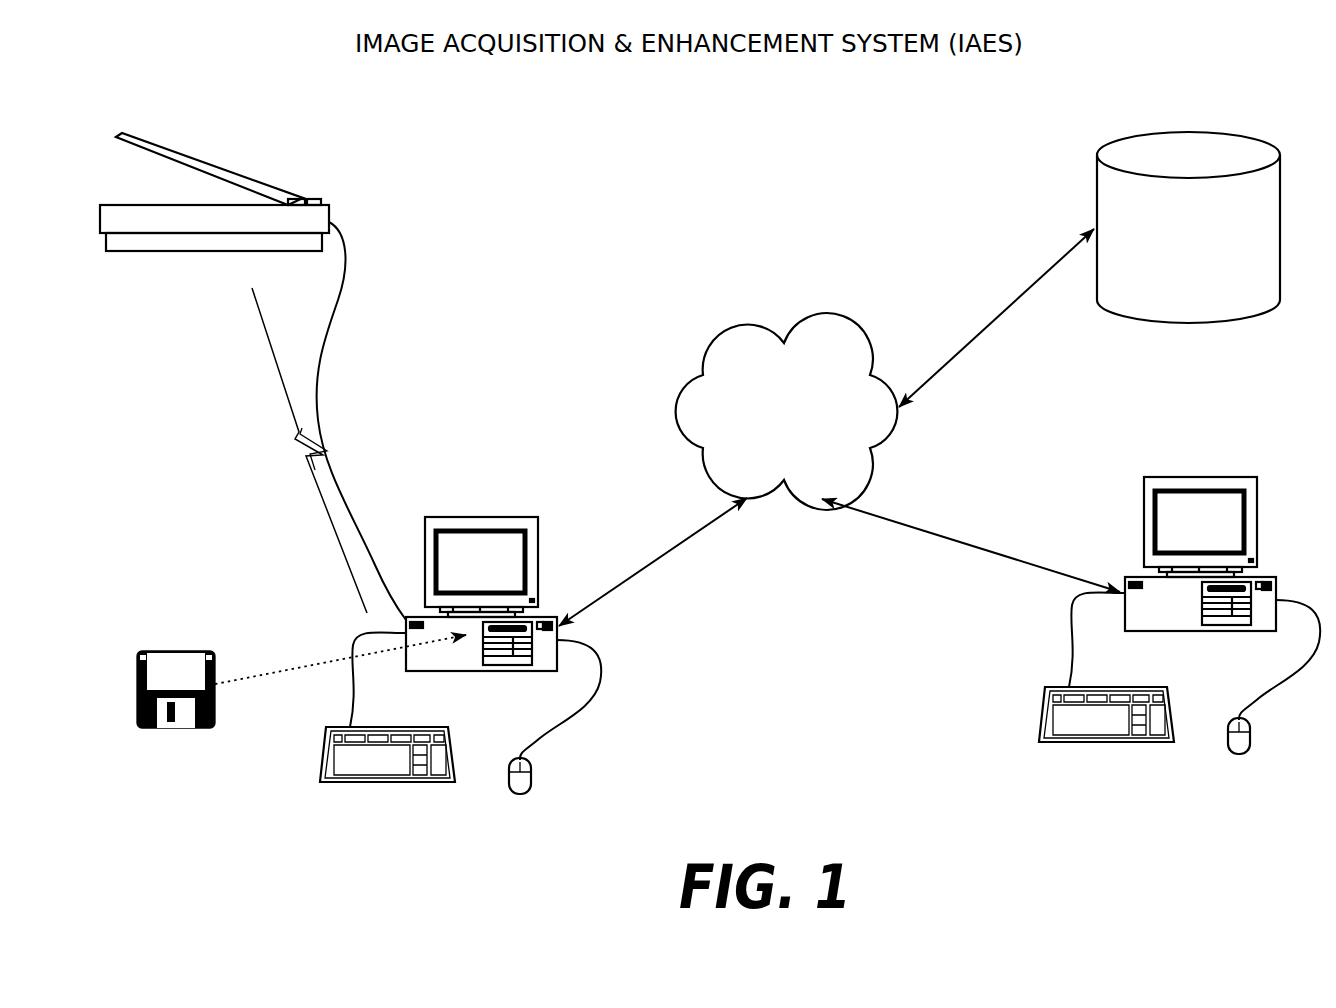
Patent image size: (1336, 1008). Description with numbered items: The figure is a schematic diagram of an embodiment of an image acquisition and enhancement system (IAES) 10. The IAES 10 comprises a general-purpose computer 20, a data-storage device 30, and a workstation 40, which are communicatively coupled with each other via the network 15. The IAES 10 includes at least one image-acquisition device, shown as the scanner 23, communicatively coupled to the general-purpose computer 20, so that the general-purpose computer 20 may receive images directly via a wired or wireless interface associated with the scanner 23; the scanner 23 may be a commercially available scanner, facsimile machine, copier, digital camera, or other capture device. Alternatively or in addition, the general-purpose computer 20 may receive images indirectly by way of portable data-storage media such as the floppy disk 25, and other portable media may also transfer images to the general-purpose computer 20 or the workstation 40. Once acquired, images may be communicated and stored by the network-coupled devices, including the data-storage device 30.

The image acquisition and enhancement system 10 is at (787, 129).
The network 15 is at (818, 323).
The general-purpose computer 20 is at (481, 515).
The scanner 23 is at (275, 185).
The floppy disk 25 is at (187, 650).
The data-storage device 30 is at (1187, 130).
The workstation 40 is at (1201, 476).